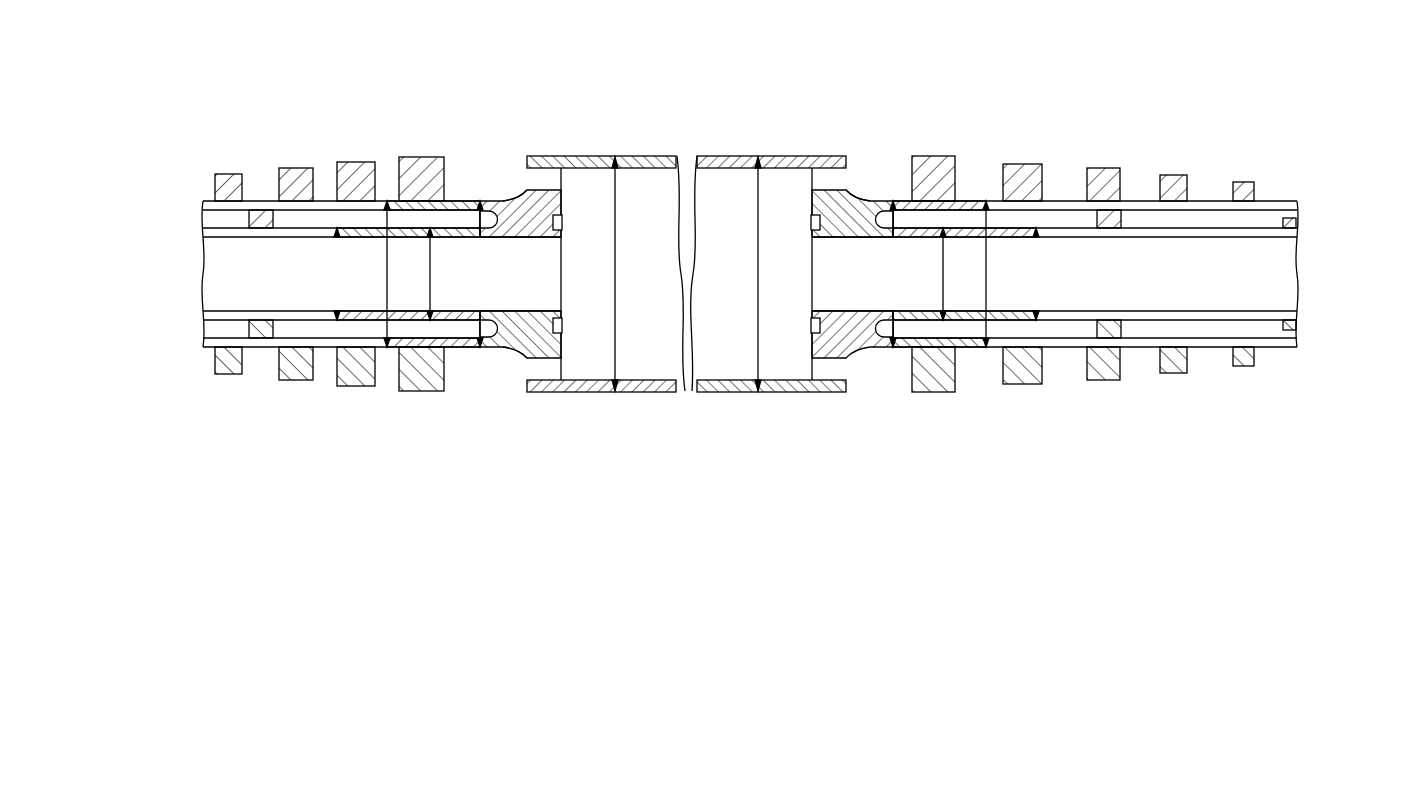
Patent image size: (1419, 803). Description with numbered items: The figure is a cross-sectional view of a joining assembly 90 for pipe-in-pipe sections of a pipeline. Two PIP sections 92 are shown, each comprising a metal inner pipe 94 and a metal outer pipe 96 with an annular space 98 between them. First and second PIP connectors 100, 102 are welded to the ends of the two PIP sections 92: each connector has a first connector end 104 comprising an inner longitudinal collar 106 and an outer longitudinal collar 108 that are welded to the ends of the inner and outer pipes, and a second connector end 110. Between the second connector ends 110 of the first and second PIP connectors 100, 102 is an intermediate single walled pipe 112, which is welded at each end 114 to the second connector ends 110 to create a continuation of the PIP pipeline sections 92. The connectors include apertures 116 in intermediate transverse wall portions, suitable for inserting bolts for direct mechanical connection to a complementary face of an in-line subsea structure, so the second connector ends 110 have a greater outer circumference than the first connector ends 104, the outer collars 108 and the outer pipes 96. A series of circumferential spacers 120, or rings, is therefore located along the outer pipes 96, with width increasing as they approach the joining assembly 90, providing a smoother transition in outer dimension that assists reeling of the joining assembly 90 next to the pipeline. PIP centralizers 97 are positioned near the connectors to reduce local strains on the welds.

The joining assembly 90 is at (530, 546).
The PIP section 92 is at (282, 414).
The inner pipe 94 is at (347, 299).
The outer pipe 96 is at (461, 200).
The PIP centralizer 97 is at (1110, 222).
The annular space 98 is at (188, 332).
The first PIP connector 100 is at (495, 353).
The second PIP connector 102 is at (858, 352).
The first connector end 104 is at (483, 369).
The inner longitudinal collar 106 is at (447, 240).
The outer longitudinal collar 108 is at (510, 190).
The second connector end 110 is at (598, 141).
The intermediate single walled pipe 112 is at (658, 392).
The end 114 is at (615, 157).
The aperture 116 is at (562, 185).
The circumferential spacer 120 is at (240, 174).